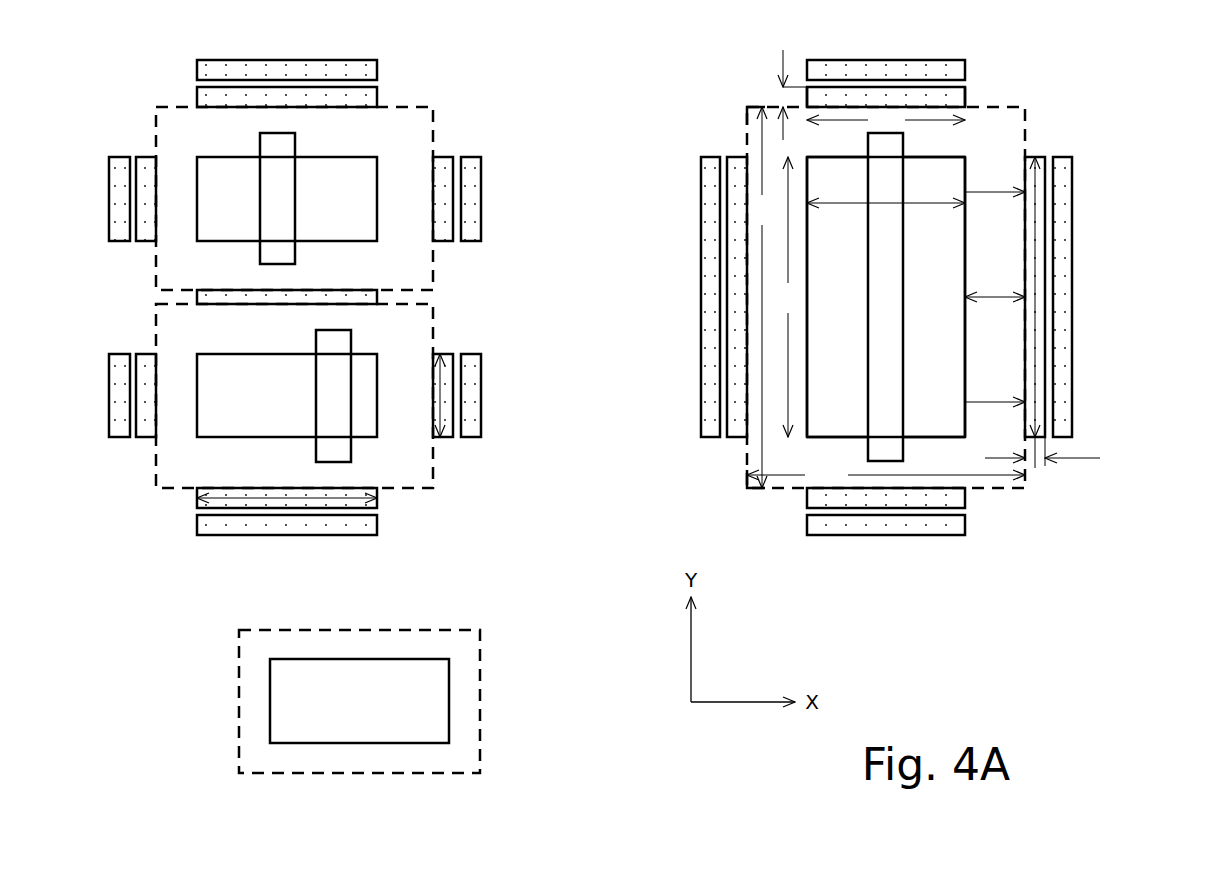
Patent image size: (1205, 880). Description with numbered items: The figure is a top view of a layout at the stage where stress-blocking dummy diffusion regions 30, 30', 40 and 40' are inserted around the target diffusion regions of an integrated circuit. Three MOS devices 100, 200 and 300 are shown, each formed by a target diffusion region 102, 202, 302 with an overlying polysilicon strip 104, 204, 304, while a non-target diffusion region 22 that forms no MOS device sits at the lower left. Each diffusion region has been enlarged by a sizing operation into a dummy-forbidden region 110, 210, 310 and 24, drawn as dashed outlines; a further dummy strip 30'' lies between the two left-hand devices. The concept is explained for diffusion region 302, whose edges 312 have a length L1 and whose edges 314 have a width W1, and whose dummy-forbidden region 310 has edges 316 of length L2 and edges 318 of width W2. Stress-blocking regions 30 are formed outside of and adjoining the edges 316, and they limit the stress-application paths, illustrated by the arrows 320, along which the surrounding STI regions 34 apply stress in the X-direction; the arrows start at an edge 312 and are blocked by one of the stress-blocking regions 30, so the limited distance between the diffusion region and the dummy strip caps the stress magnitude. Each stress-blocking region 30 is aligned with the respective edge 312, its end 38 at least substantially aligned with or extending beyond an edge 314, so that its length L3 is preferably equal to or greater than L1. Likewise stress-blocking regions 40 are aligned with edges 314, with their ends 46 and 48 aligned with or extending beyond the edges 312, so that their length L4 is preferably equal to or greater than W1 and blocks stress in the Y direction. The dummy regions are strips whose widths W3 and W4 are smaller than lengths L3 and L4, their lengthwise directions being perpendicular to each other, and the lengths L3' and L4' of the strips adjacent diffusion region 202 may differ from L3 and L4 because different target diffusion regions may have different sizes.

The non-target diffusion region 22 is at (359, 701).
The dummy-forbidden region 24 is at (482, 700).
The stress-blocking dummy diffusion region 30 is at (627, 272).
The stress-blocking dummy diffusion region 30' is at (620, 272).
The middle pattern between structures 30'' is at (347, 278).
The STI region 34 is at (1117, 360).
The end of stress-blocking region 38 is at (1035, 470).
The stress-blocking dummy diffusion region 40 is at (581, 299).
The stress-blocking dummy diffusion region 40' is at (581, 297).
The end of stress-blocking region 46 is at (967, 95).
The end of stress-blocking region 48 is at (807, 97).
The MOS device 100 is at (287, 194).
The diffusion region 102 is at (209, 205).
The polysilicon strip 104 is at (262, 148).
The dummy-forbidden region 110 is at (170, 102).
The MOS device 200 is at (310, 397).
The diffusion region 202 is at (239, 405).
The polysilicon strip 204 is at (318, 345).
The dummy-forbidden region 210 is at (156, 470).
The MOS device 300 is at (943, 346).
The diffusion region 302 is at (819, 304).
The polysilicon strip 304 is at (900, 448).
The dummy-forbidden region 310 is at (868, 279).
The edge of diffusion region 312 is at (808, 265).
The edge of diffusion region 314 is at (855, 157).
The edge of dummy-forbidden region 316 is at (747, 470).
The edge of dummy-forbidden region 318 is at (747, 112).
The arrows 320 is at (990, 192).
The length of edges of diffusion region L1 is at (790, 297).
The length of edges of dummy-forbidden region L2 is at (764, 297).
The length of stress-blocking regions L3 is at (1098, 297).
The length of stress-blocking regions L3' is at (491, 395).
The length of stress-blocking regions L4 is at (886, 120).
The length of stress-blocking regions L4' is at (287, 544).
The width of edges of diffusion region W1 is at (886, 188).
The width of edges of dummy-forbidden region W2 is at (886, 475).
The width of stress-blocking regions W3 is at (1092, 460).
The width of stress-blocking regions W4 is at (783, 62).